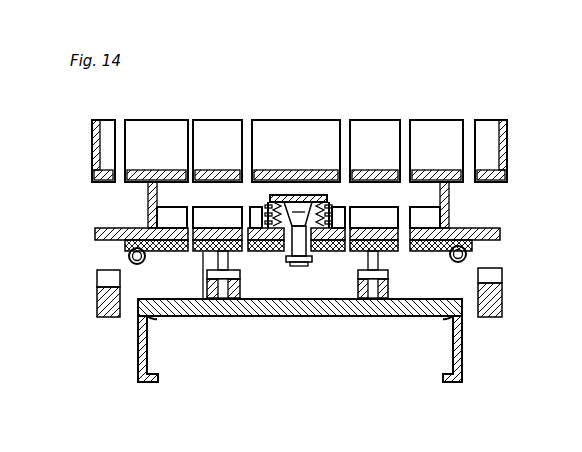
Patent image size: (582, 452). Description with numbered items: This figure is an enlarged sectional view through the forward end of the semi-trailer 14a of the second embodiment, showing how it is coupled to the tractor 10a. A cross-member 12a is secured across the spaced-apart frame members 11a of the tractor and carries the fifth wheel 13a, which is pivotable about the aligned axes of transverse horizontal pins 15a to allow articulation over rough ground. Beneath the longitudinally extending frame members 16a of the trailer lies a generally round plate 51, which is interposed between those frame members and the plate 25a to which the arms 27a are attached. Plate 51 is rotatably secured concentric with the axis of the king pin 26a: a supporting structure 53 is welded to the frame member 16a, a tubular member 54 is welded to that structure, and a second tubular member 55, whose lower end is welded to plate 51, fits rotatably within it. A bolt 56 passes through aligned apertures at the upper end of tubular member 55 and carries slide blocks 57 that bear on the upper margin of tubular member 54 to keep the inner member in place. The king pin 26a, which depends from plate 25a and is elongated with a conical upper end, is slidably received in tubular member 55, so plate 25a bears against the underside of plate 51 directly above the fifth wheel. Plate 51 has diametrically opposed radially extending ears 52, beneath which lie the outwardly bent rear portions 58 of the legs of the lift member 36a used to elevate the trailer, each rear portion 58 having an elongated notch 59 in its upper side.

The semi-trailer 14a is at (508, 132).
The supporting structure 53 is at (209, 215).
The tubular member 55 is at (273, 210).
The slide blocks 57 is at (279, 197).
The bolt 56 is at (301, 196).
The tubular member 54 is at (333, 212).
The frame members 16a is at (148, 201).
The plate 51 is at (471, 233).
The ears 52 is at (101, 229).
The arms 27a is at (128, 255).
The notch 59 is at (99, 278).
The lift member 36a is at (97, 298).
The rear portions 58 is at (112, 318).
The plate 25a is at (164, 252).
The pins 15a is at (241, 276).
The king pin 26a is at (301, 264).
The fifth wheel 13a is at (203, 252).
The cross-member 12a is at (300, 313).
The frame members 11a is at (145, 358).
The tractor 10a is at (137, 368).